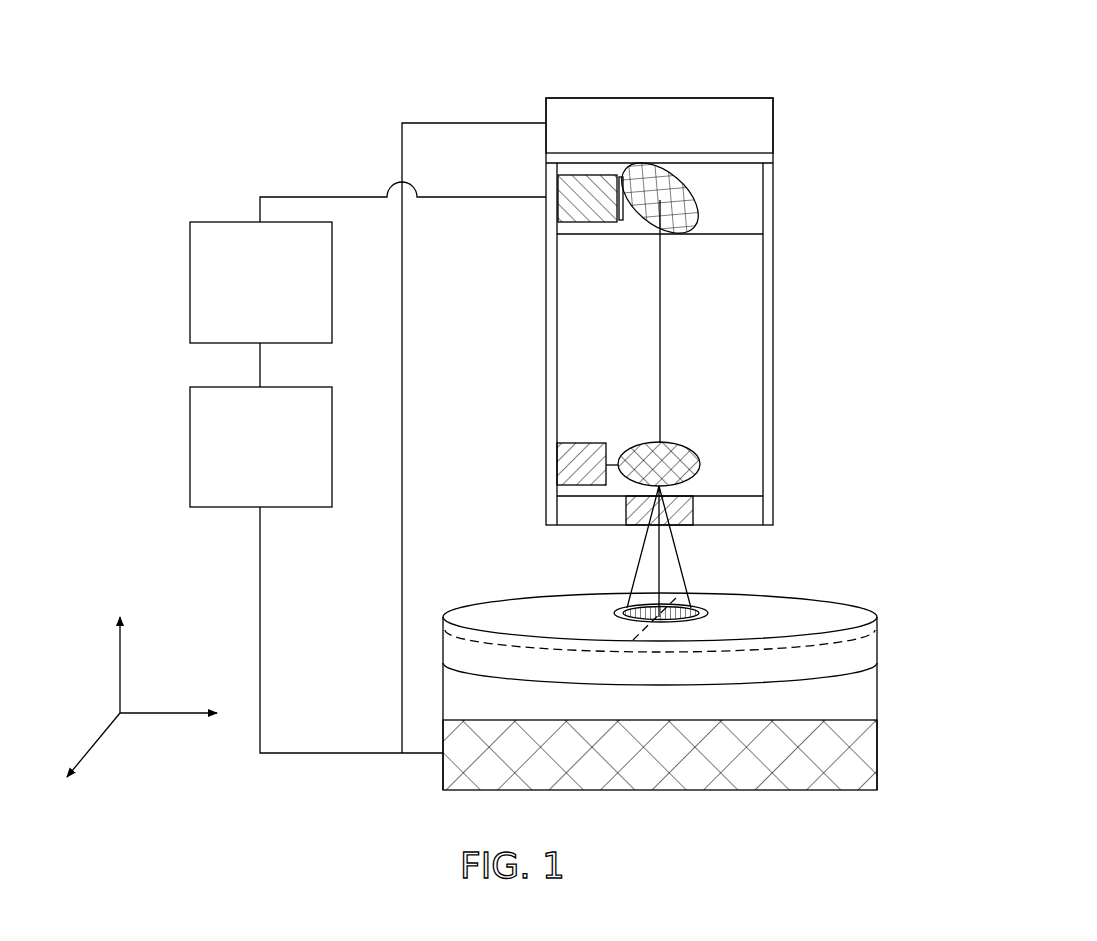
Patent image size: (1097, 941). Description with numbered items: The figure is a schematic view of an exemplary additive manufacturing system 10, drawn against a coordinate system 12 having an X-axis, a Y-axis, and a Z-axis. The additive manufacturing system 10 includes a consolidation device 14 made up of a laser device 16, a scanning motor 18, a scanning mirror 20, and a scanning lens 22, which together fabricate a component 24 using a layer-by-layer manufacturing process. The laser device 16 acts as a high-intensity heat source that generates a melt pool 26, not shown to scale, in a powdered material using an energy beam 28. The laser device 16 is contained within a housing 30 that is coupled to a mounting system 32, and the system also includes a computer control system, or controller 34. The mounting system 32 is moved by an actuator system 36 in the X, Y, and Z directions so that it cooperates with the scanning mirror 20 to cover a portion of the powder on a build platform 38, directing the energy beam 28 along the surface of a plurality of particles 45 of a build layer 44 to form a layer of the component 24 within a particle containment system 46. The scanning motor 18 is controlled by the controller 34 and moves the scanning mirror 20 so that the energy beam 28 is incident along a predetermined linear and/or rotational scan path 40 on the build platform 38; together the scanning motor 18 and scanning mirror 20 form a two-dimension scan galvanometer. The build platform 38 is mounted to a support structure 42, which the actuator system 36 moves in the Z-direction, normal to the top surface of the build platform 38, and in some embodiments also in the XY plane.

The additive manufacturing system 10 is at (672, 62).
The coordinate system 12 is at (80, 678).
The consolidation device 14 is at (892, 248).
The laser device 16 is at (557, 188).
The scanning motor 18 is at (557, 447).
The scanning mirror 20 is at (698, 455).
The scanning lens 22 is at (693, 508).
The component 24 is at (620, 607).
The melt pool 26 is at (702, 606).
The energy beam 28 is at (662, 270).
The housing 30 is at (773, 333).
The mounting system 32 is at (763, 122).
The controller 34 is at (277, 294).
The actuator system 36 is at (277, 459).
The build platform 38 is at (868, 696).
The scan path 40 is at (637, 632).
The support structure 42 is at (857, 766).
The build layer 44 is at (676, 590).
The particles 45 is at (812, 585).
The particle containment system 46 is at (893, 620).